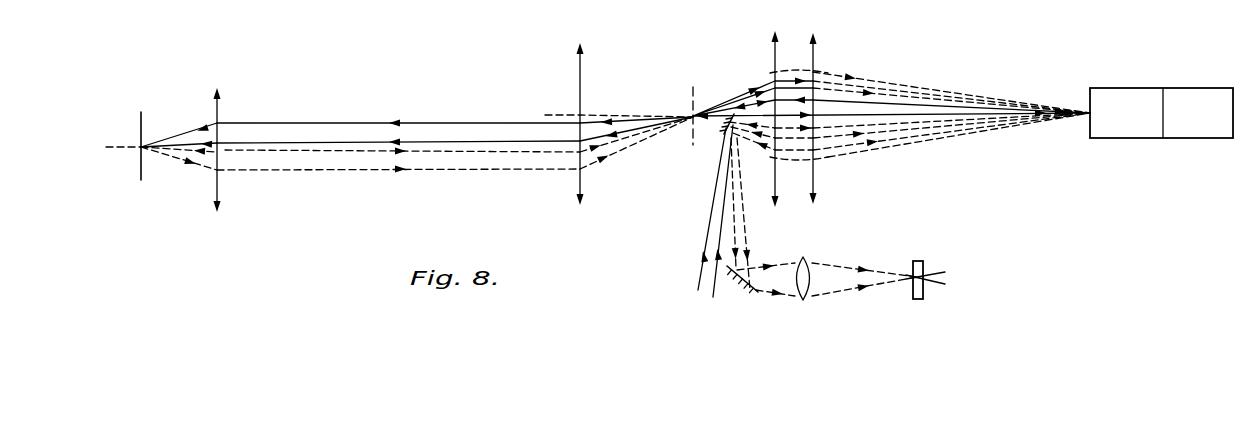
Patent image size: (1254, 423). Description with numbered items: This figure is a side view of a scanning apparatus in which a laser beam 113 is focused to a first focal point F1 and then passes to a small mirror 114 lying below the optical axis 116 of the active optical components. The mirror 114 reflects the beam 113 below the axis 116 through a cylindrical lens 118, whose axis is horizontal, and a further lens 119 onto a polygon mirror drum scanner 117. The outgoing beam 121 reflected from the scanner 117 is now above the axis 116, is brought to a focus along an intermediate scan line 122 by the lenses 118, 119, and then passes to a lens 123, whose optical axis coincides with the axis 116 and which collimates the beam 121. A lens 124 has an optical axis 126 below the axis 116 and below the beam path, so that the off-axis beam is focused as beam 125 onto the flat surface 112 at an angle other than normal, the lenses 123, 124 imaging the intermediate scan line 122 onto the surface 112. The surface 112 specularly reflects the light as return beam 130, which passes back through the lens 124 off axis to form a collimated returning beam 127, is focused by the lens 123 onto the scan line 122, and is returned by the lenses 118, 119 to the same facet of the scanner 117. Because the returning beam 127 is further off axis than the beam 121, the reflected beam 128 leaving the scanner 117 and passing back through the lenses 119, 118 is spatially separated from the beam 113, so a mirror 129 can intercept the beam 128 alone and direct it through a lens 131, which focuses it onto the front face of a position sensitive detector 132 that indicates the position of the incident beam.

The flat surface 112 is at (140, 128).
The laser beam 113 is at (822, 133).
The small mirror 114 is at (722, 142).
The first focal point F1 is at (727, 150).
The optical axis 116 is at (592, 115).
The polygon mirror drum scanner 117 is at (1137, 88).
The cylindrical lens 118 is at (775, 35).
The further lens 119 is at (815, 60).
The outgoing beam 121 is at (512, 128).
The intermediate scan line 122 is at (699, 93).
The further lens 123 is at (578, 53).
The lens 124 is at (220, 98).
The beam 125 is at (177, 140).
The optical axis 126 is at (337, 147).
The returning beam 127 is at (280, 163).
The returning beam 128 is at (903, 145).
The mirror 129 is at (753, 297).
The return specularly reflected beam 130 is at (180, 162).
The lens 131 is at (803, 300).
The position sensitive detector 132 is at (918, 299).